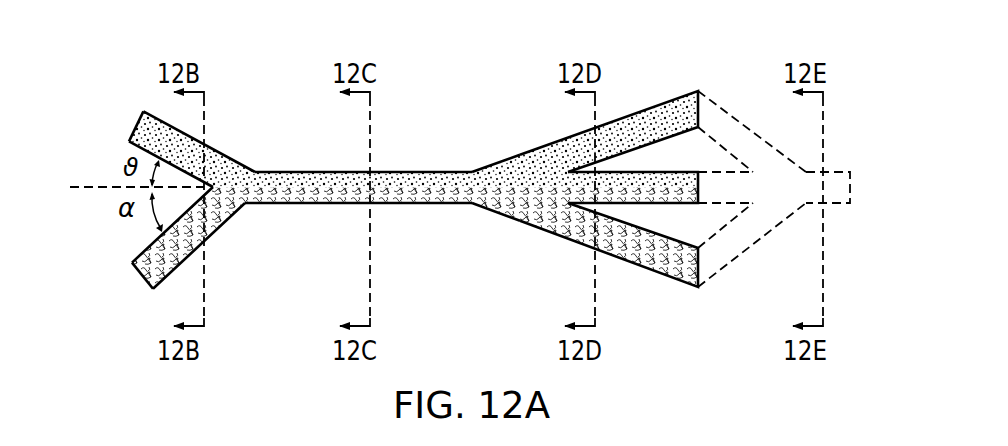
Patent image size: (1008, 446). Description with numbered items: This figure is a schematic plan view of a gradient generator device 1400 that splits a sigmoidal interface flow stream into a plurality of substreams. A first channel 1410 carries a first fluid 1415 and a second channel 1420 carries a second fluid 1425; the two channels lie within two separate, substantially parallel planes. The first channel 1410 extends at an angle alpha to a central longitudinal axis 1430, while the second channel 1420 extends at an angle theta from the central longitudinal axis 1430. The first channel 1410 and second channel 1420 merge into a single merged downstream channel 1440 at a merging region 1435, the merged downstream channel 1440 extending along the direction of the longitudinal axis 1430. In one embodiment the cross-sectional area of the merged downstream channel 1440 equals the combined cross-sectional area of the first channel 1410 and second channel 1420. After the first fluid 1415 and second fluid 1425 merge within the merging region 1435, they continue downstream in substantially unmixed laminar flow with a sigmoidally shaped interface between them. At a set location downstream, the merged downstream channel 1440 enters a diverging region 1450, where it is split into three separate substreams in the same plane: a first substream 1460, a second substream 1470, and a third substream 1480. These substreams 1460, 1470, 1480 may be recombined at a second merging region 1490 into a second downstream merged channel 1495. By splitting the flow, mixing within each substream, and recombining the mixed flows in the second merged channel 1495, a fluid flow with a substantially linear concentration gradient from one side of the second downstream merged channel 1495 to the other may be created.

The device 1400 is at (129, 60).
The first channel 1410 is at (218, 228).
The first fluid 1415 is at (173, 280).
The second channel 1420 is at (218, 156).
The second fluid 1425 is at (140, 133).
The central longitudinal axis 1430 is at (88, 182).
The merging region 1435 is at (257, 172).
The merged downstream channel 1440 is at (415, 172).
The diverging region 1450 is at (472, 171).
The first substream 1460 is at (636, 260).
The second substream 1470 is at (623, 205).
The third substream 1480 is at (667, 102).
The second merging region 1490 is at (808, 172).
The second downstream merged channel 1495 is at (850, 172).